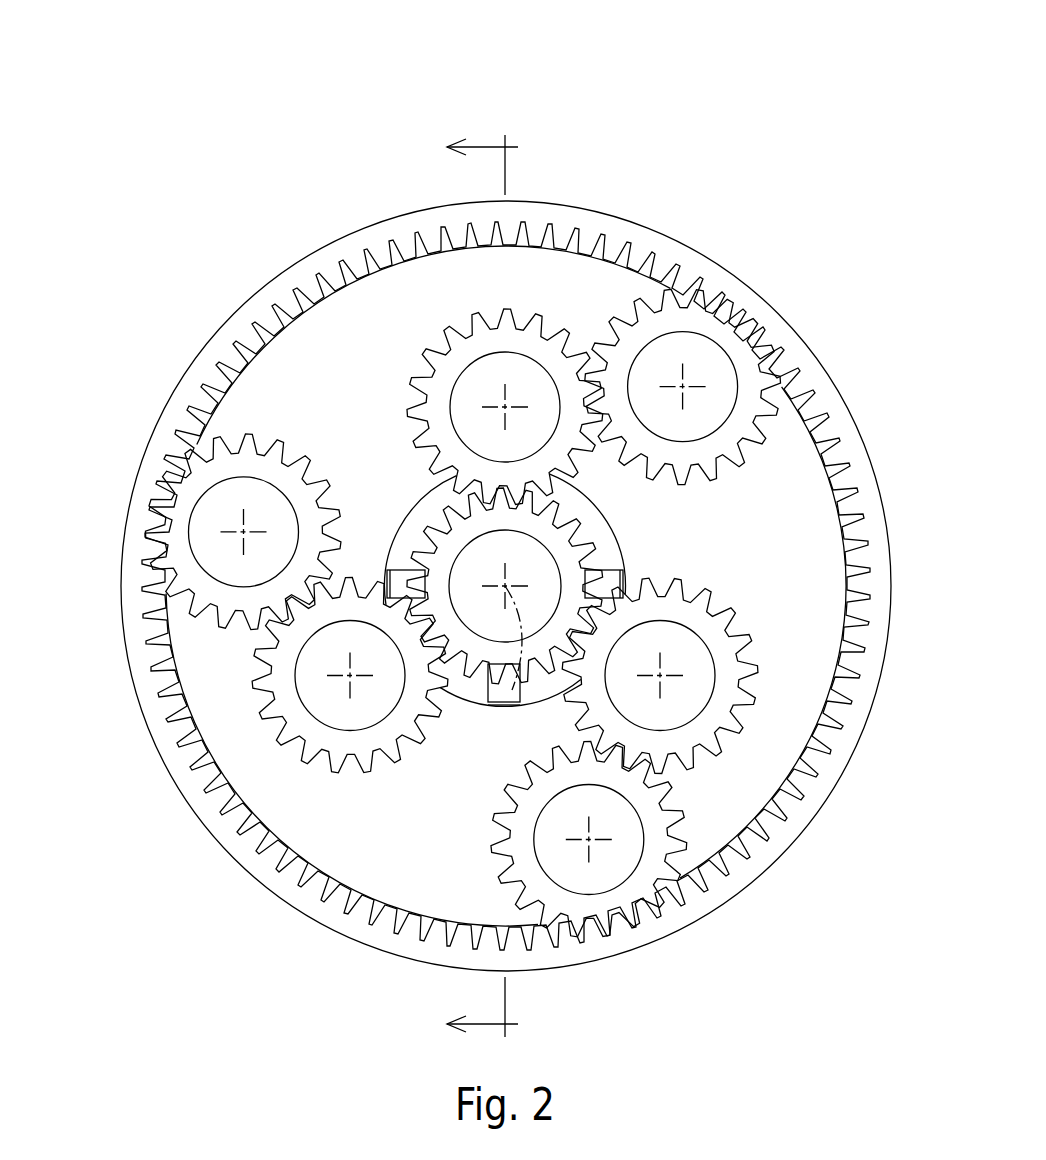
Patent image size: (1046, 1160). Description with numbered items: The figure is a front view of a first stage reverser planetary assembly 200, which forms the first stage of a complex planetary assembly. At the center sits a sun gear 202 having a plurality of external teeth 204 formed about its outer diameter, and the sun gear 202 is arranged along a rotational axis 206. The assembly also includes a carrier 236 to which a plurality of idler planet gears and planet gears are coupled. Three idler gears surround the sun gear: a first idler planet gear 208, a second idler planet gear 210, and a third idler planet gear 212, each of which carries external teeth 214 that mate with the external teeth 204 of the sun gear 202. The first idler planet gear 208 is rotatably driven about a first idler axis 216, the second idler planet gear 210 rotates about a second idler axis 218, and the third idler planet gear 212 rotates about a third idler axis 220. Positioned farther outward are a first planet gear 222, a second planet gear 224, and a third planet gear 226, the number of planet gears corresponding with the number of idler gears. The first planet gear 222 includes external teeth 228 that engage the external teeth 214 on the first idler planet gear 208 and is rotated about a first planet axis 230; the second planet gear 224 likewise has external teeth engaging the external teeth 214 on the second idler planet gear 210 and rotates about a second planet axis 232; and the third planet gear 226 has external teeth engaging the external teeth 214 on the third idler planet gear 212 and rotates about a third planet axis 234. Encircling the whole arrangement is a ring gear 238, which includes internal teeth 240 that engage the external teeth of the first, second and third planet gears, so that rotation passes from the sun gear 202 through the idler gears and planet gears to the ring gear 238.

The first stage reverser planetary assembly 200 is at (723, 118).
The sun gear 202 is at (610, 556).
The external teeth 204 is at (583, 503).
The rotational axis 206 is at (503, 704).
The first idler planet gear 208 is at (722, 648).
The second idler planet gear 210 is at (417, 373).
The third idler planet gear 212 is at (262, 657).
The external teeth 214 is at (512, 315).
The first idler axis 216 is at (660, 676).
The second idler axis 218 is at (505, 407).
The third idler axis 220 is at (350, 676).
The first planet gear 222 is at (650, 873).
The second planet gear 224 is at (715, 312).
The third planet gear 226 is at (178, 506).
The external teeth 228 is at (743, 827).
The first planet axis 230 is at (589, 840).
The second planet axis 232 is at (683, 387).
The third planet axis 234 is at (243, 532).
The carrier 236 is at (783, 453).
The ring gear 238 is at (227, 337).
The internal teeth 240 is at (230, 372).